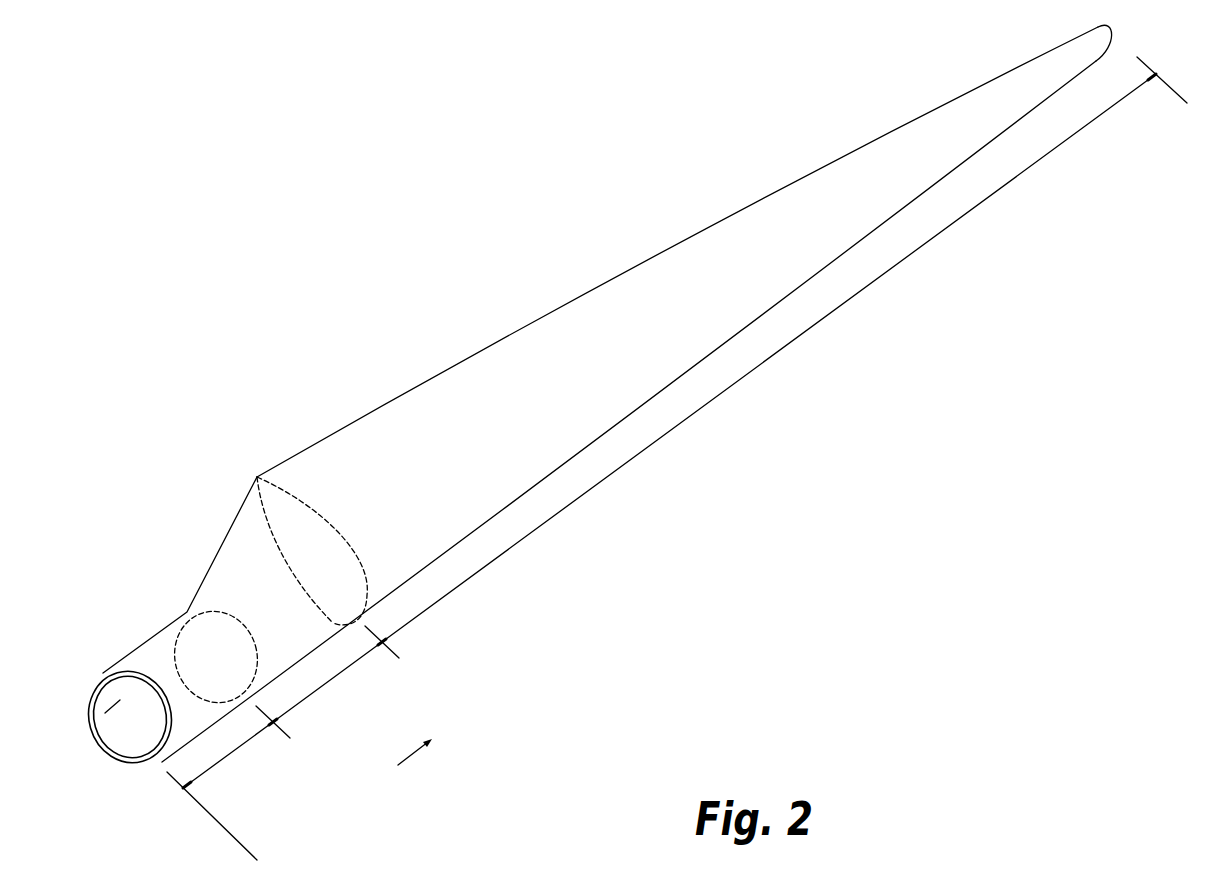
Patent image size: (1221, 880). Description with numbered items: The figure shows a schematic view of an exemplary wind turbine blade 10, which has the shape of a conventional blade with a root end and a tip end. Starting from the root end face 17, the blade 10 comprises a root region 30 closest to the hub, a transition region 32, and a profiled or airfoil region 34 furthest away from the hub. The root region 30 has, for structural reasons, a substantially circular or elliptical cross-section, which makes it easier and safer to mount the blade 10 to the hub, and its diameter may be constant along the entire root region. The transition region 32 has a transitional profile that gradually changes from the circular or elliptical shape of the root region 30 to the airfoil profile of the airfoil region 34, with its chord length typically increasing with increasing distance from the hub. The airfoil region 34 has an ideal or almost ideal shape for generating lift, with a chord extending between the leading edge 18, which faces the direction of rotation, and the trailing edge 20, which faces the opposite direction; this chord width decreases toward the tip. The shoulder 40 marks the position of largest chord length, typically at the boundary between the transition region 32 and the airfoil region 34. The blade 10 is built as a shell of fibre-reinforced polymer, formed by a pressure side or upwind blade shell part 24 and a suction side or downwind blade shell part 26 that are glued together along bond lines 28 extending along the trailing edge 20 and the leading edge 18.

The wind turbine blade 10 is at (728, 144).
The root end face 17 is at (97, 717).
The leading edge 18 is at (803, 282).
The trailing edge 20 is at (670, 250).
The pressure side blade shell part 24 is at (105, 670).
The suction side blade shell part 26 is at (153, 760).
The bond lines 28 is at (122, 670).
The root region 30 is at (230, 747).
The transition region 32 is at (332, 679).
The airfoil region 34 is at (690, 413).
The shoulder 40 is at (257, 477).